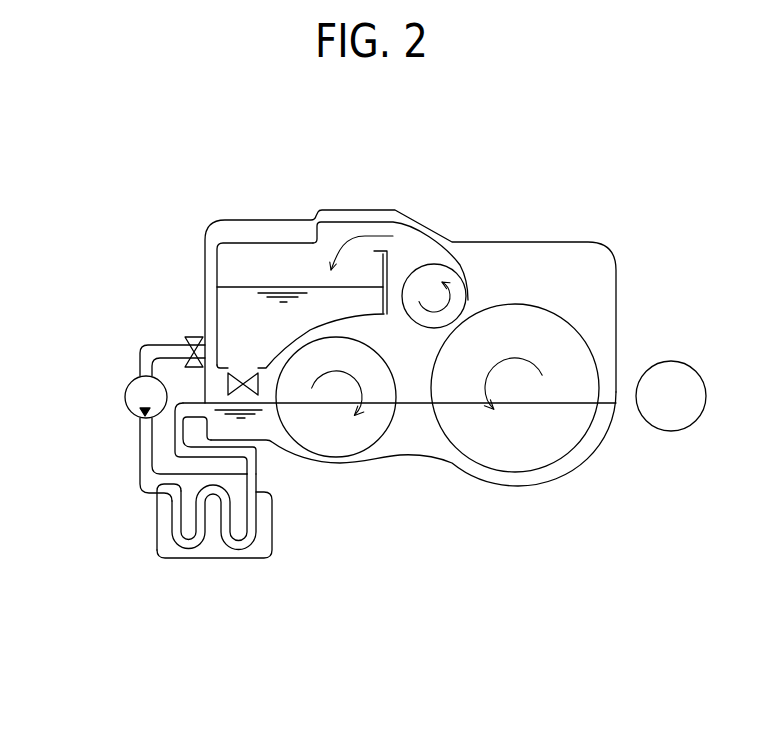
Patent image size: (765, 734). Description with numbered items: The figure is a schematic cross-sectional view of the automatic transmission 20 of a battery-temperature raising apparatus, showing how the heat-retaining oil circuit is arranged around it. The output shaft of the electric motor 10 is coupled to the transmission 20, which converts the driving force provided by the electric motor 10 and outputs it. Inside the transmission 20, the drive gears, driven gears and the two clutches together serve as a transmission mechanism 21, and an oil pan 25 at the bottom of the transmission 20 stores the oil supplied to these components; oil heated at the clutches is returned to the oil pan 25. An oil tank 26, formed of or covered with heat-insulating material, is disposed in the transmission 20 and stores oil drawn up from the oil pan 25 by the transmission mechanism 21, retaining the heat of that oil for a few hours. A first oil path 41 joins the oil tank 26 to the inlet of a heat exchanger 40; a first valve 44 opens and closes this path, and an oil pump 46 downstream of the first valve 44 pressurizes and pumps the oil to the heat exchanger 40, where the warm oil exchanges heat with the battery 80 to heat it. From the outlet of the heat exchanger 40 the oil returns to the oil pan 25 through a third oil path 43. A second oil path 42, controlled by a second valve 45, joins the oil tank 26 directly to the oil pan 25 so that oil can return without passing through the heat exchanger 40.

The electric motor 10 is at (341, 443).
The automatic transmission 20 is at (562, 245).
The transmission mechanism 21 is at (492, 287).
The oil pan 25 is at (418, 448).
The oil tank 26 is at (275, 250).
The heat exchanger 40 is at (163, 523).
The first oil path 41 is at (141, 364).
The second oil path 42 is at (228, 375).
The third oil path 43 is at (140, 450).
The first valve 44 is at (200, 337).
The second valve 45 is at (260, 392).
The oil pump 46 is at (122, 400).
The battery 80 is at (215, 558).